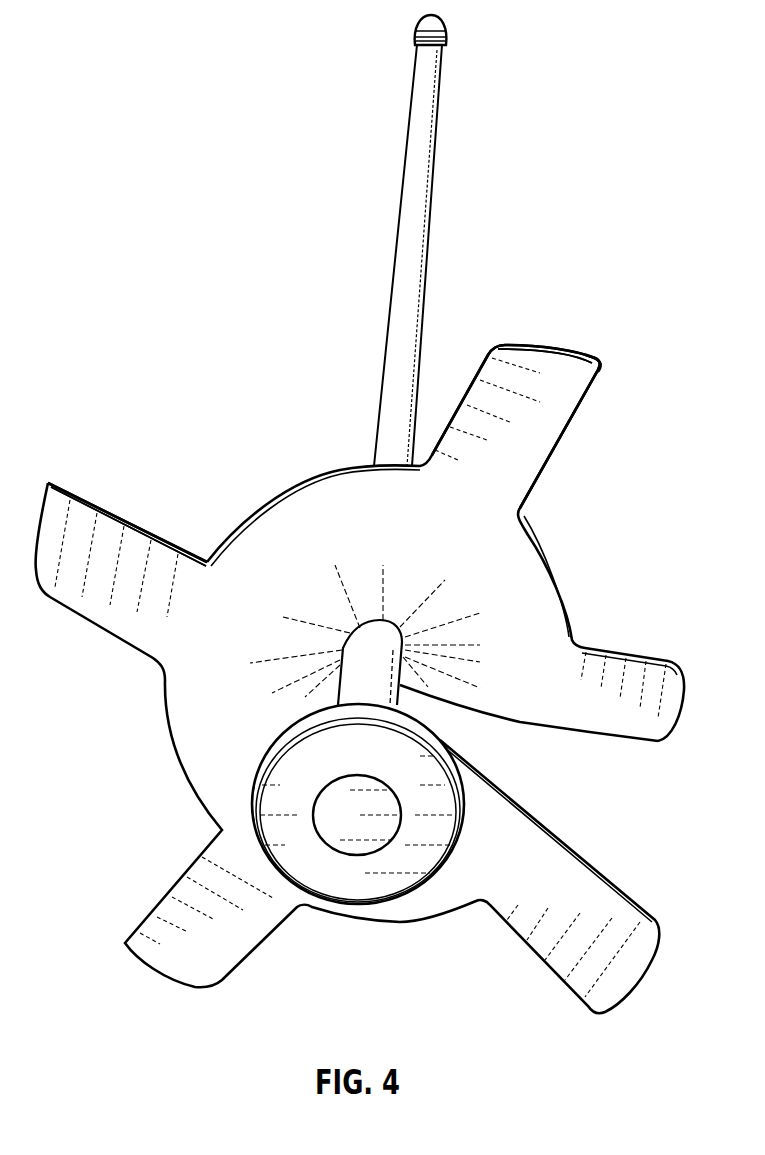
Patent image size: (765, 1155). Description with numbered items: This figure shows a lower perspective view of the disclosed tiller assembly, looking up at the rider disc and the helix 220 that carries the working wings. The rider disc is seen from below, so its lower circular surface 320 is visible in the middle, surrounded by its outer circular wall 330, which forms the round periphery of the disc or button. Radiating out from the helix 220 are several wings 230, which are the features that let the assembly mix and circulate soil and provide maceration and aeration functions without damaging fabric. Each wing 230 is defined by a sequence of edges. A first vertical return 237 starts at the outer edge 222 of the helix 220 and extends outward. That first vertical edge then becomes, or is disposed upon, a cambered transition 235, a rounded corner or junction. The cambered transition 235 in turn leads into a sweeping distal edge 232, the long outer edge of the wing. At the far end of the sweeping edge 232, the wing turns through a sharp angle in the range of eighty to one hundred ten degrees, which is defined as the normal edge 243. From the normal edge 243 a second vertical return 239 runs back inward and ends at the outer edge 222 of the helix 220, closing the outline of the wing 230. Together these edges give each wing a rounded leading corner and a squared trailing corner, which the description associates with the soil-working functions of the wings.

The helix 220 is at (311, 591).
The outer edge of helix 222 is at (281, 494).
The wing 230 is at (535, 458).
The sweeping distal edge of wing 232 is at (557, 342).
The cambered transition 235 is at (503, 340).
The first vertical return 237 is at (468, 388).
The second vertical return 239 is at (567, 432).
The normal edge 243 is at (598, 363).
The lower circular surface of rider disc 320 is at (357, 888).
The outer circular wall of rider disc 330 is at (292, 733).